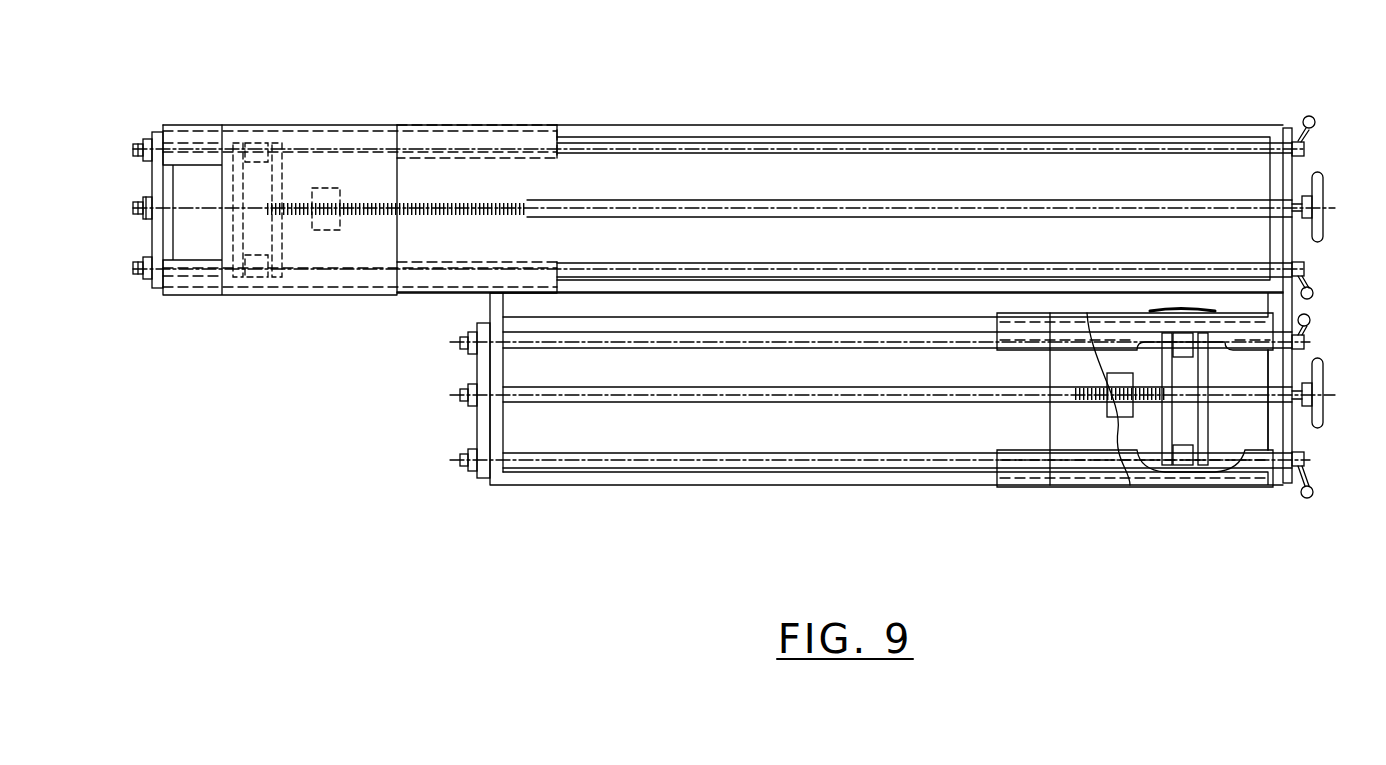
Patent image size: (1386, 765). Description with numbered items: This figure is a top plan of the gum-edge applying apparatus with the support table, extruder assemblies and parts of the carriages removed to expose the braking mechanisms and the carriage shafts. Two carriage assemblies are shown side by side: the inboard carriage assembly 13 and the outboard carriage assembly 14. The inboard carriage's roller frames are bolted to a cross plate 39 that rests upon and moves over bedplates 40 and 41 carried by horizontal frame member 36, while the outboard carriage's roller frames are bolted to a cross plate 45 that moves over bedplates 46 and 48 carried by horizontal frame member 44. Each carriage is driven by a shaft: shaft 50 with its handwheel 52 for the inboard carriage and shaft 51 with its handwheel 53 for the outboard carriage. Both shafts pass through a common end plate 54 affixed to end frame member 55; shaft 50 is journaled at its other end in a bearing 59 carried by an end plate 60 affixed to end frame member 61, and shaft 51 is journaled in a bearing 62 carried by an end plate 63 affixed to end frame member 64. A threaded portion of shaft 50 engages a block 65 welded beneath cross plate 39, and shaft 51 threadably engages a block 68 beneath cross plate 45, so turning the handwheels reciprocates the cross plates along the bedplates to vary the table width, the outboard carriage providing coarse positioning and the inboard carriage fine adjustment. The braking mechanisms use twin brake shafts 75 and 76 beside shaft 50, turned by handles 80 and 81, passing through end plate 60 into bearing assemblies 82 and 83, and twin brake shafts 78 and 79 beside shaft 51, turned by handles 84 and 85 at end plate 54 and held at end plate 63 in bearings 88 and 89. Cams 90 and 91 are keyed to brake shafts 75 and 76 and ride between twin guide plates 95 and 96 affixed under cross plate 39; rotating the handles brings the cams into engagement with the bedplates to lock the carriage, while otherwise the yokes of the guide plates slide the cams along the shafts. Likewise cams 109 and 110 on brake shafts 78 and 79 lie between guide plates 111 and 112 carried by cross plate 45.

The inboard carriage assembly 13 is at (1175, 580).
The outboard carriage assembly 14 is at (232, 90).
The horizontal frame member 36 is at (725, 477).
The cross plate 39 is at (1070, 370).
The bedplate 40 is at (1013, 475).
The bedplate 41 is at (1003, 323).
The horizontal frame member 44 is at (1135, 130).
The cross plate 45 is at (390, 175).
The bedplate 46 is at (535, 285).
The bedplate 48 is at (540, 132).
The shaft 50 is at (805, 402).
The shaft 51 is at (568, 208).
The handwheel 52 is at (1318, 420).
The handwheel 53 is at (1318, 230).
The end plate 54 is at (1292, 483).
The end frame member 55 is at (1273, 362).
The bearing 59 is at (470, 408).
The end plate 60 is at (485, 427).
The end frame member 61 is at (495, 430).
The bearing 62 is at (147, 223).
The end plate 63 is at (153, 183).
The end frame member 64 is at (167, 175).
The block 65 is at (1115, 410).
The block 68 is at (330, 223).
The brake shaft 75 is at (640, 466).
The brake shaft 76 is at (707, 344).
The brake shaft 78 is at (655, 265).
The brake shaft 79 is at (668, 152).
The handle 80 is at (1313, 496).
The handle 81 is at (1313, 324).
The bearing assembly 82 is at (475, 471).
The bearing assembly 83 is at (475, 355).
The handle 84 is at (1314, 293).
The handle 85 is at (1312, 116).
The bearing 88 is at (148, 277).
The bearing 89 is at (150, 140).
The cam 90 is at (1187, 463).
The cam 91 is at (1187, 345).
The guide plate 95 is at (1207, 420).
The guide plate 96 is at (1167, 433).
The cam 109 is at (263, 273).
The cam 110 is at (277, 150).
The guide plate 111 is at (197, 163).
The guide plate 112 is at (282, 170).